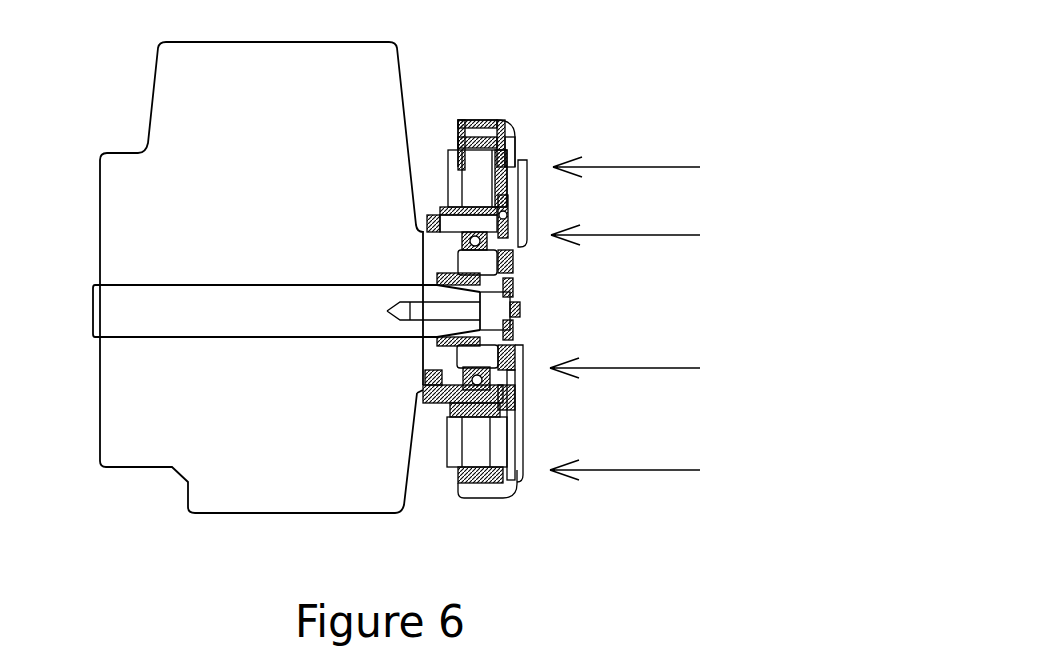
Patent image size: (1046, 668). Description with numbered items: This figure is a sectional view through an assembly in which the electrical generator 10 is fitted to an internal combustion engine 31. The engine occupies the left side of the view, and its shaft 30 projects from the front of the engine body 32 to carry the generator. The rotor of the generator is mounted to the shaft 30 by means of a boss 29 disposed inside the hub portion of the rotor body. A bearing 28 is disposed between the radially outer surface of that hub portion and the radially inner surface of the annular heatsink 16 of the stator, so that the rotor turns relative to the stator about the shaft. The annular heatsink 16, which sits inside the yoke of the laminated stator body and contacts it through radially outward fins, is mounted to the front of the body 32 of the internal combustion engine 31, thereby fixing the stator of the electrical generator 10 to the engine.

The electrical generator 10 is at (542, 295).
The annular heatsink 16 is at (427, 400).
The bearing 28 is at (513, 215).
The boss 29 is at (520, 255).
The shaft 30 is at (443, 294).
The internal combustion engine 31 is at (187, 522).
The body 32 is at (358, 477).